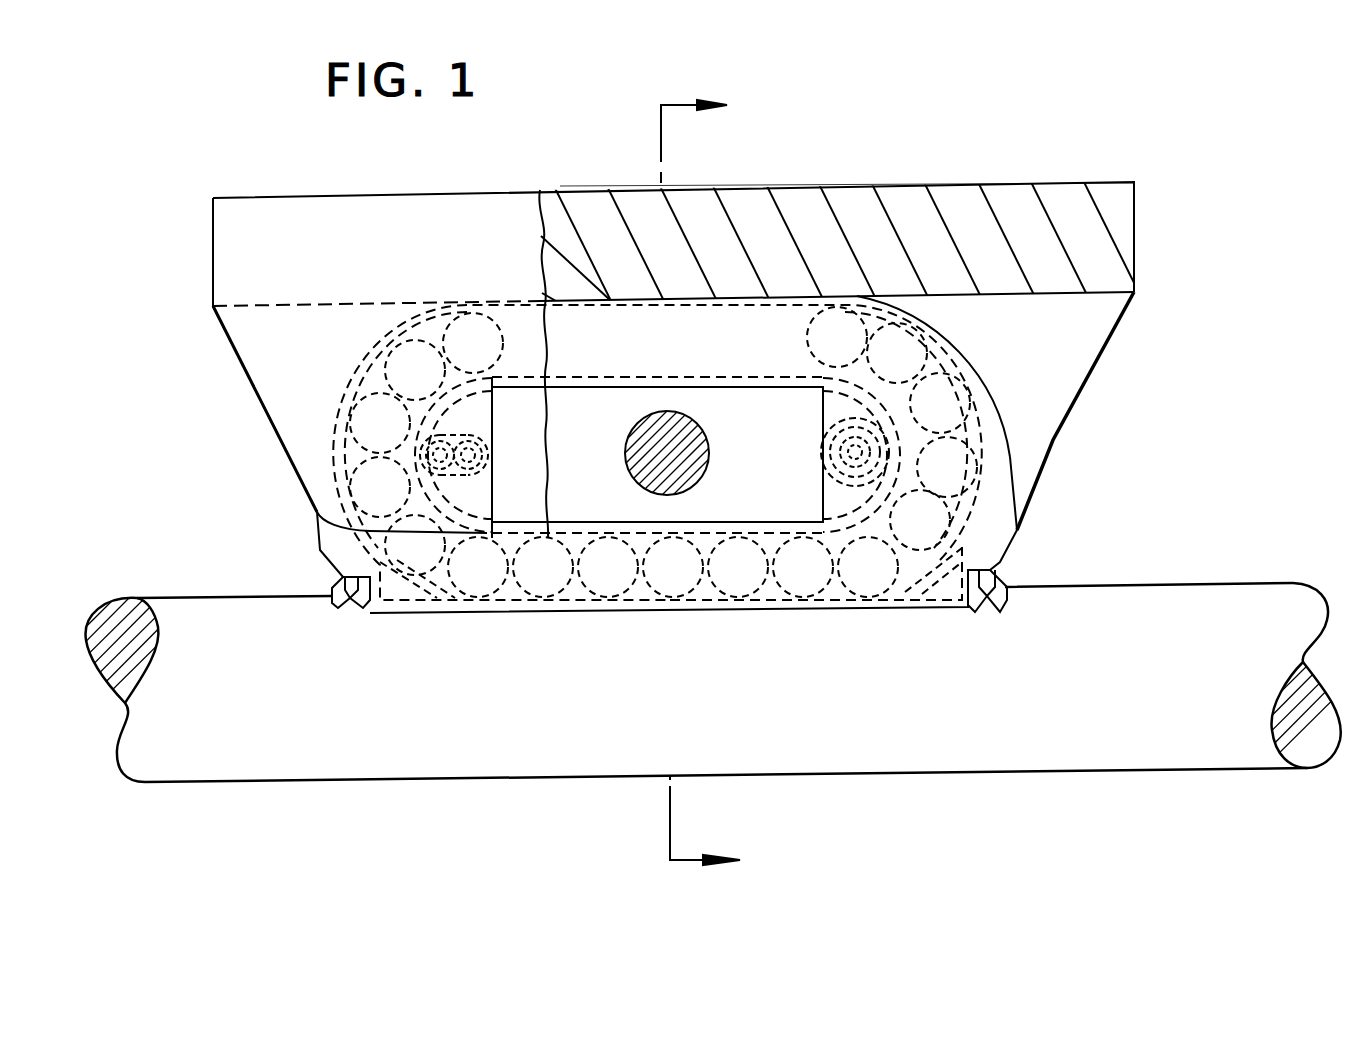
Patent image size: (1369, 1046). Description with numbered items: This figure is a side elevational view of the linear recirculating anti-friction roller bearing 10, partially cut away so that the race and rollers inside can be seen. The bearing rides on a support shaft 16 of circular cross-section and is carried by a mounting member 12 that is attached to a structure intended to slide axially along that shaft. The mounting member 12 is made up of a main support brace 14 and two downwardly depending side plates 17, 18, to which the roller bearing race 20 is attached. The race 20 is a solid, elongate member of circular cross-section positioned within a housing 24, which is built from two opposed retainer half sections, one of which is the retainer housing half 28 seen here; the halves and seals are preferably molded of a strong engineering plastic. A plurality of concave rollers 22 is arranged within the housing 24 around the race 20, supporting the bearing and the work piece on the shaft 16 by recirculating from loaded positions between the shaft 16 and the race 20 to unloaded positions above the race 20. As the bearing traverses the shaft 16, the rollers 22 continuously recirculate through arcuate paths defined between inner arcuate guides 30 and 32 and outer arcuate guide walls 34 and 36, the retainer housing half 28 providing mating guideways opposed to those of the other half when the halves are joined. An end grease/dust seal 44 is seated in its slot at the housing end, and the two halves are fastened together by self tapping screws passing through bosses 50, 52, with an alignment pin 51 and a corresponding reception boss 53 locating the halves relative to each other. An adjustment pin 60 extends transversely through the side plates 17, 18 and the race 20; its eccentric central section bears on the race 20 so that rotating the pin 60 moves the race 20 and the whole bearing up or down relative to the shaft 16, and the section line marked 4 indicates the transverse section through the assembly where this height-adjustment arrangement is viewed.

The section line 4- 4 is at (685, 485).
The linear recirculating anti-friction roller bearing 10 is at (1158, 272).
The mounting member 12 is at (1100, 195).
The main support brace 14 is at (946, 249).
The support shaft 16 is at (1111, 692).
The side plate 17 is at (1050, 374).
The side plate 18 is at (309, 385).
The roller bearing race 20 is at (811, 460).
The concave rollers 22 is at (480, 588).
The housing 24 is at (1026, 533).
The retainer housing half 28 is at (218, 332).
The inner arcuate guide 30 is at (474, 527).
The inner arcuate guide 32 is at (843, 498).
The outer arcuate guide wall 34 is at (330, 470).
The outer arcuate guide wall 36 is at (1010, 463).
The end grease/dust seal 44 is at (330, 588).
The boss 50 is at (478, 440).
The alignment pin 51 is at (893, 452).
The boss 52 is at (840, 430).
The reception boss 53 is at (470, 430).
The adjustment pin 60 is at (690, 476).